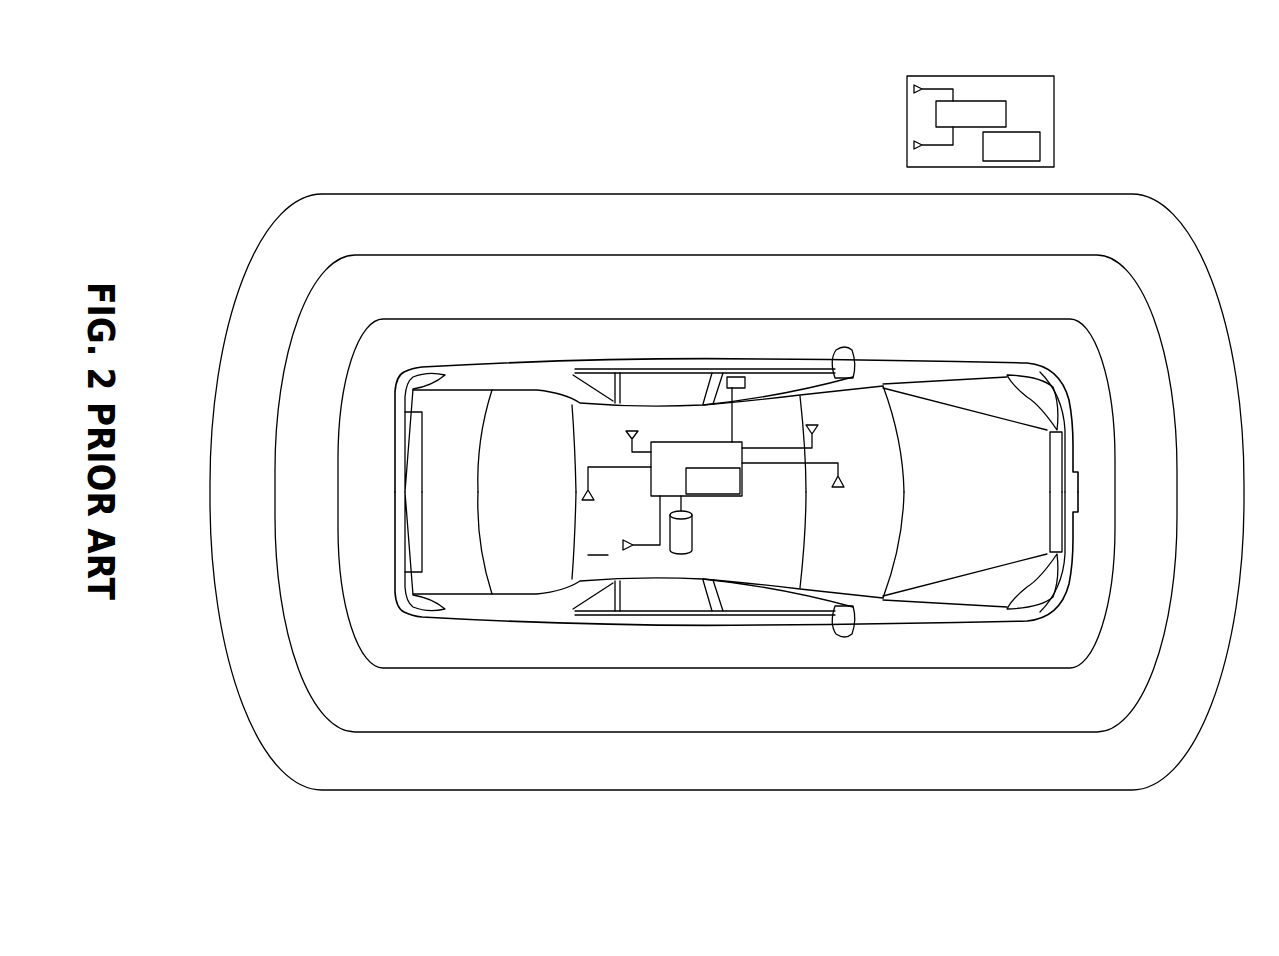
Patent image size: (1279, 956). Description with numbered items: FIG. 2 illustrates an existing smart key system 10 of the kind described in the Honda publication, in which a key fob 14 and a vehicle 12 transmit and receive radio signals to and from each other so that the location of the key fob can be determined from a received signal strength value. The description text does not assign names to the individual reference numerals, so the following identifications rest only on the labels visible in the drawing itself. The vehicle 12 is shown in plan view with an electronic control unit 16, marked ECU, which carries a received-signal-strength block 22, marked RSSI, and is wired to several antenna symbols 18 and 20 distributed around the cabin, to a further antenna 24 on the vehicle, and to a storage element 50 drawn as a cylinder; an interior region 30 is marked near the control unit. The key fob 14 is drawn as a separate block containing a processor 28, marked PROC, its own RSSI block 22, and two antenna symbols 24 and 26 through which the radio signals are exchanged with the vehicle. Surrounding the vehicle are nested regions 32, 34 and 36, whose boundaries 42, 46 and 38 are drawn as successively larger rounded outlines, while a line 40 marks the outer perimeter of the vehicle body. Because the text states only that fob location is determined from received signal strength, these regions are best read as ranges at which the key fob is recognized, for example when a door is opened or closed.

The passive entry system 10 is at (1180, 201).
The vehicle 12 is at (739, 503).
The key fob 14 is at (995, 104).
The electronic control unit (ECU) 16 is at (651, 482).
The low frequency antenna 18 is at (625, 437).
The antenna 20 is at (586, 483).
The RSSI module 22 is at (742, 480).
The antenna 24 is at (743, 378).
The fob antenna 26 is at (932, 84).
The processor 28 is at (975, 100).
The vehicle interior zone 30 is at (598, 544).
The first zone 32 is at (726, 514).
The second zone 34 is at (726, 514).
The third zone 36 is at (727, 513).
The outer zone boundary 38 is at (397, 791).
The vehicle perimeter 40 is at (485, 622).
The first zone boundary 42 is at (462, 668).
The second zone boundary 46 is at (428, 733).
The memory 50 is at (693, 543).